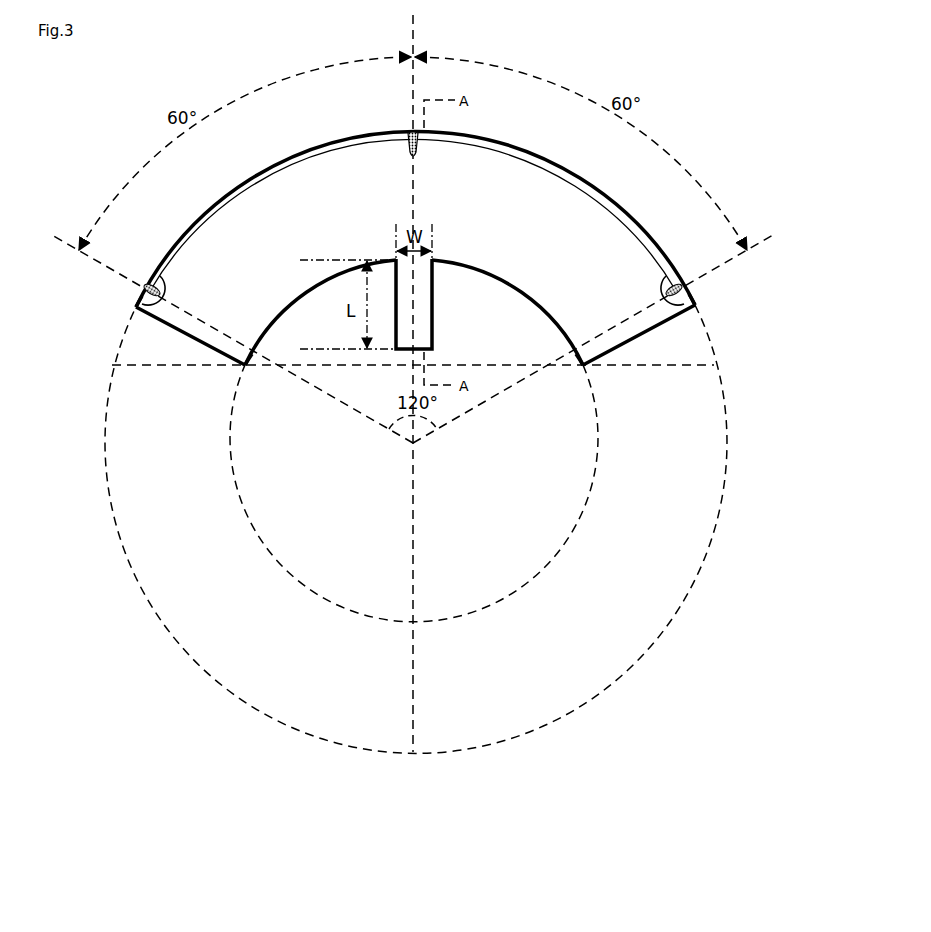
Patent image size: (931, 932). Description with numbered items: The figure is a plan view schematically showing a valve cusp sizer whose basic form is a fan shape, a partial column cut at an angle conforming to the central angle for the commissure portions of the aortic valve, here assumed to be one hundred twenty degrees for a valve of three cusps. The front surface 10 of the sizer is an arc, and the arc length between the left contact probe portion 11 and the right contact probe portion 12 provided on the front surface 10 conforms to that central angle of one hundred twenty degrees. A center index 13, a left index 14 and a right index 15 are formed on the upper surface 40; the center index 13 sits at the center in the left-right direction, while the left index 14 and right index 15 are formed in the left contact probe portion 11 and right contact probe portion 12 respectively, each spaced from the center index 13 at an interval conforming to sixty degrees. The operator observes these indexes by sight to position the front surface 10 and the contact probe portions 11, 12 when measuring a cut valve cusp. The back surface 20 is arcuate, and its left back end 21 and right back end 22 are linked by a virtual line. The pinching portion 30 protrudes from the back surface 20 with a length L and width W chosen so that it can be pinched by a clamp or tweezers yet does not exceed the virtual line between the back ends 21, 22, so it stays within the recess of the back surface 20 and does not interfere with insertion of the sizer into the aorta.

The front surface 10 is at (513, 146).
The left contact probe portion 11 is at (137, 300).
The right contact probe portion 12 is at (697, 302).
The center index 13 is at (408, 132).
The left index 14 is at (152, 287).
The right index 15 is at (683, 285).
The back surface 20 is at (538, 313).
The left back end 21 is at (247, 369).
The right back end 22 is at (585, 372).
The pinching portion 30 is at (415, 308).
The upper surface 40 is at (183, 324).